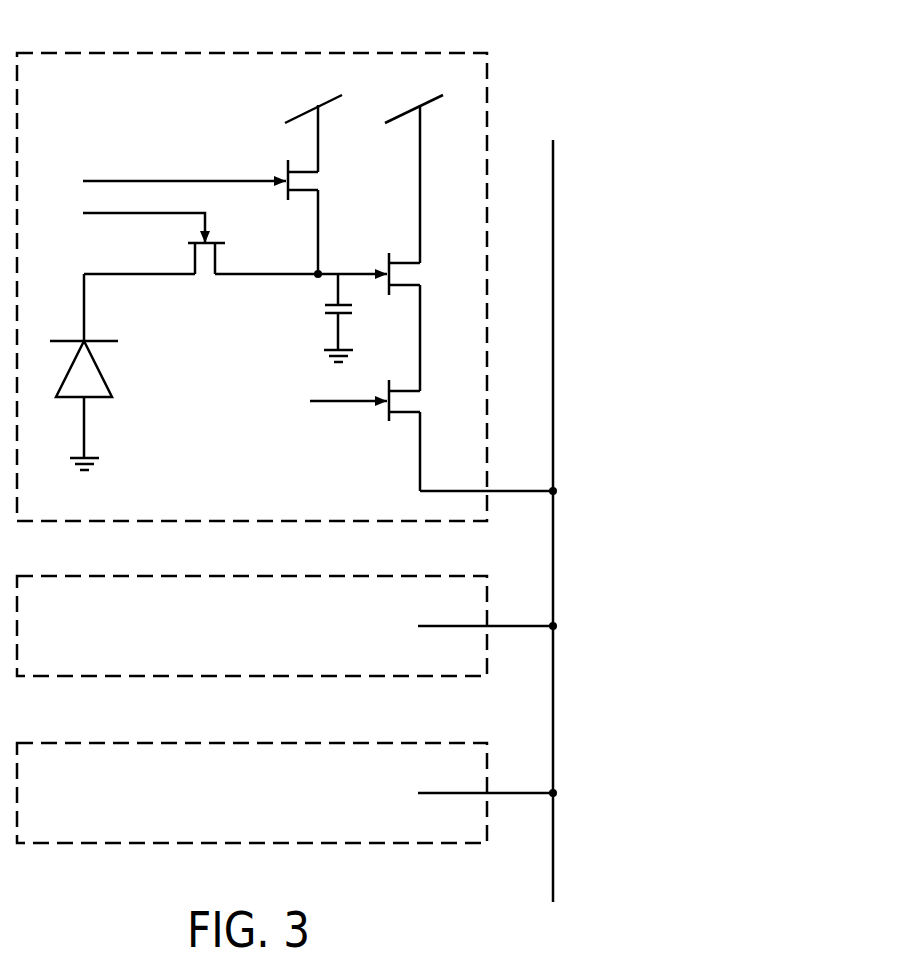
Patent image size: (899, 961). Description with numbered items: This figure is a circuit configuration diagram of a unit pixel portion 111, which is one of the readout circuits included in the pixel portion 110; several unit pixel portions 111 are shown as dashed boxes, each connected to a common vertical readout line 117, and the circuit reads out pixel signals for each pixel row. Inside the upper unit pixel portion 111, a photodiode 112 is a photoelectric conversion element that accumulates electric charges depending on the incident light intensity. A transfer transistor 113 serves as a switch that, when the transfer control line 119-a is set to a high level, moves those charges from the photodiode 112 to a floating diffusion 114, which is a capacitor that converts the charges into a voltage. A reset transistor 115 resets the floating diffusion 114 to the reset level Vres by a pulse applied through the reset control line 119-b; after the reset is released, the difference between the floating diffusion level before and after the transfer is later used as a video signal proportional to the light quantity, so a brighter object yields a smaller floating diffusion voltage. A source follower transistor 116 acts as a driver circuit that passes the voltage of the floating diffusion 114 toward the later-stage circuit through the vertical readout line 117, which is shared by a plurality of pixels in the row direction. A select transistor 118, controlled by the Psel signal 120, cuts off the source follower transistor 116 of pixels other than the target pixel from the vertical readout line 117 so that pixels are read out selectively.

The pixel portion 110 is at (527, 33).
The unit pixel portion 111 is at (142, 65).
The photodiode 112 is at (89, 389).
The transfer transistor 113 is at (198, 254).
The floating diffusion 114 is at (324, 307).
The reset transistor 115 is at (300, 173).
The source follower transistor 116 is at (413, 273).
The vertical readout line 117 is at (553, 390).
The select transistor 118 is at (412, 403).
The transfer control line 119-a is at (131, 216).
The reset control line 119-b is at (172, 168).
The Psel signal 120 is at (326, 387).